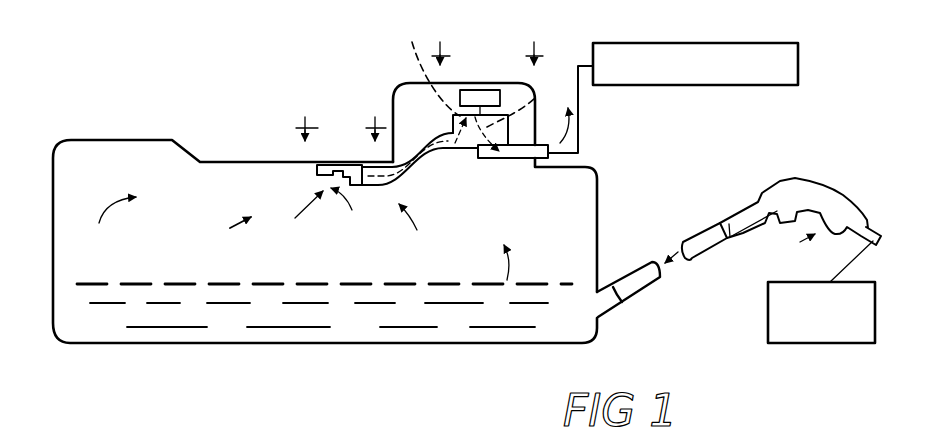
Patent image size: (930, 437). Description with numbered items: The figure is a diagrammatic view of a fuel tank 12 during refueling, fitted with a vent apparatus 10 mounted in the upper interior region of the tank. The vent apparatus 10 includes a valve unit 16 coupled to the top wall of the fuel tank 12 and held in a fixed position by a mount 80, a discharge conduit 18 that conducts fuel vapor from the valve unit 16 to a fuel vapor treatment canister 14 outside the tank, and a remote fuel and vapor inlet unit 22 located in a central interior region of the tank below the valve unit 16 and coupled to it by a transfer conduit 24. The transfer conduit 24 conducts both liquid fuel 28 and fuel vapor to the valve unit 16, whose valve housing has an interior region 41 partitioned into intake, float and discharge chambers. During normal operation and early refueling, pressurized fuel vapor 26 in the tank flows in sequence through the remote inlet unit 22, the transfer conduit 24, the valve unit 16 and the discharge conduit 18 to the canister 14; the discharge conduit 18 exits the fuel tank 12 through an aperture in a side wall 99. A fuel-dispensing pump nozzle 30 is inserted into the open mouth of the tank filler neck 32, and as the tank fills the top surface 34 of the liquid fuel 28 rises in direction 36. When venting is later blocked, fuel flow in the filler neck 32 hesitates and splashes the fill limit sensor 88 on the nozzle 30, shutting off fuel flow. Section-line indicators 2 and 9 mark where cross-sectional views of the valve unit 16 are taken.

The section line 2- 2 is at (485, 36).
The section line 9- 9 is at (341, 113).
The vent apparatus 10 is at (415, 110).
The fuel tank 12 is at (606, 196).
The fuel vapor treatment canister 14 is at (711, 86).
The valve unit 16 is at (472, 162).
The discharge conduit 18 is at (523, 164).
The remote inlet unit 22 is at (306, 175).
The transfer conduit 24 is at (377, 191).
The pressurized fuel vapor 26 is at (222, 245).
The liquid fuel 28 is at (162, 297).
The fuel-dispensing pump nozzle 30 is at (792, 196).
The tank filler neck 32 is at (710, 227).
The top surface of liquid fuel 34 is at (424, 283).
The direction of rising fuel surface 36 is at (512, 267).
The interior region of valve housing 41 is at (465, 78).
The mount 80 is at (489, 89).
The fill limit sensor 88 is at (742, 232).
The side wall 99 is at (535, 120).